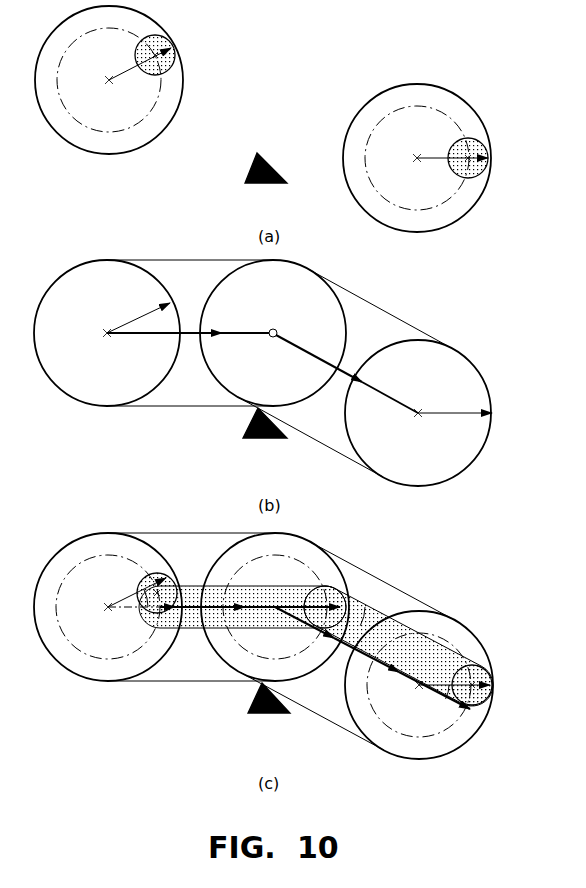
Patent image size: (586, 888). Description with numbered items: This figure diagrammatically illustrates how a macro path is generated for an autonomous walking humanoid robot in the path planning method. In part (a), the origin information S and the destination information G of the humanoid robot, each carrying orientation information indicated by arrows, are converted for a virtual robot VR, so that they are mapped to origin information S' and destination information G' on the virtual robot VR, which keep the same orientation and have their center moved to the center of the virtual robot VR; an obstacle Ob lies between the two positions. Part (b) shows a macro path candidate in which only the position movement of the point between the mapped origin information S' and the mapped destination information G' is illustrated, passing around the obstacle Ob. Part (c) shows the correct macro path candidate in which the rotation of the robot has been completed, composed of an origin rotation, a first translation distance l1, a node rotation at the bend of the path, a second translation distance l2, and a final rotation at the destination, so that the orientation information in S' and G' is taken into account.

The virtual robot VR is at (78, 152).
The obstacle Ob is at (248, 167).
The origin information S is at (162, 322).
The mapped origin information S' is at (132, 329).
The destination information G is at (479, 421).
The mapped destination information G' is at (449, 411).
The distance of translation l1 is at (210, 587).
The distance of translation l2 is at (347, 692).